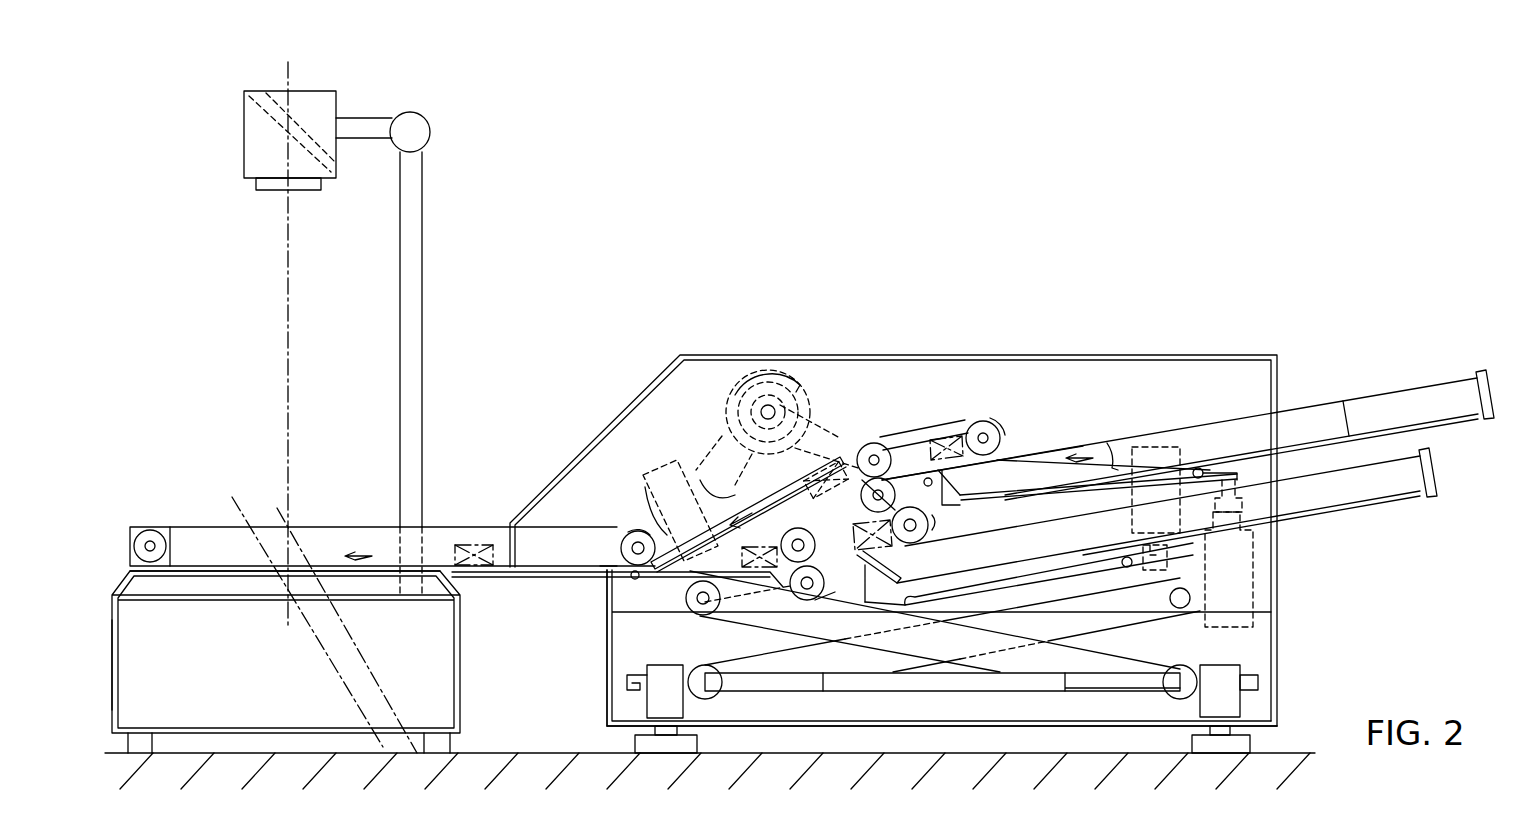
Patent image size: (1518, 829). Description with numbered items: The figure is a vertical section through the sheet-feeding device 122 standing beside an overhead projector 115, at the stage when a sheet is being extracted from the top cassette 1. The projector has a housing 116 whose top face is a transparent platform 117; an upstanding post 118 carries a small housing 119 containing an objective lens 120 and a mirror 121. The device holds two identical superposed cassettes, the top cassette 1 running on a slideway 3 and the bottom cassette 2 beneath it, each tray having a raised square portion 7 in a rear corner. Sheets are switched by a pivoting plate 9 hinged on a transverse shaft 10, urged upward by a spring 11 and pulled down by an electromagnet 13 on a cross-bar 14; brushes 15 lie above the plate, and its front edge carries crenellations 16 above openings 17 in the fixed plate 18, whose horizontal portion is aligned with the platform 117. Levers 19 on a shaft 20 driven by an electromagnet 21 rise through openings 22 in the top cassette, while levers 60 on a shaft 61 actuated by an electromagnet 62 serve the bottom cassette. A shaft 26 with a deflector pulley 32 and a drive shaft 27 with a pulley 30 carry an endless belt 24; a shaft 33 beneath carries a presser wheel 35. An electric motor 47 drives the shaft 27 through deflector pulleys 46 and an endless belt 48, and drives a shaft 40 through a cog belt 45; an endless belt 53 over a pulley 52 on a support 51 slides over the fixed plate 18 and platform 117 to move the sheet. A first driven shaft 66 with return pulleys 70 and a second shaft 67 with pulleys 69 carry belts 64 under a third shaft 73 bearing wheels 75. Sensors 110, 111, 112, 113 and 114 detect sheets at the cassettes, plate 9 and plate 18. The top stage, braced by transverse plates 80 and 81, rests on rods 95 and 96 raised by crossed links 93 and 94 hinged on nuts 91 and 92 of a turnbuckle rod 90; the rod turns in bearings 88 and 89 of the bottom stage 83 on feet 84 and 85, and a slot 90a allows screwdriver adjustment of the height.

The top cassette 1 is at (1410, 394).
The bottom cassette 2 is at (1380, 470).
The slideway 3 is at (948, 505).
The raised square portion 7 is at (865, 600).
The pivoting plate 9 is at (722, 505).
The transverse shaft 10 is at (882, 438).
The spring 11 is at (645, 574).
The electromagnet 13 is at (660, 462).
The cross-bar 14 is at (642, 490).
The brushes 15 is at (742, 488).
The crenellations 16 is at (630, 578).
The openings 17 is at (618, 560).
The fixed plate 18 is at (488, 578).
The levers 19 is at (1108, 446).
The transverse shaft 20 is at (1205, 468).
The electromagnet 21 is at (1237, 545).
The openings 22 is at (1057, 478).
The endless belt 24 is at (890, 433).
The transverse shaft 26 is at (990, 422).
The transverse shaft 27 is at (866, 444).
The deflector pulley 30 is at (858, 450).
The deflector pulley 32 is at (1003, 432).
The transverse shaft 33 is at (950, 482).
The presser wheel 35 is at (812, 545).
The shaft 40 is at (630, 532).
The cog belt 45 is at (700, 465).
The deflector pulleys 46 is at (748, 400).
The electric motor 47 is at (748, 378).
The endless belt 48 is at (820, 406).
The support 51 is at (133, 525).
The pulley 52 is at (160, 530).
The endless belt 53 is at (215, 526).
The levers 60 is at (1030, 560).
The transverse shaft 61 is at (1128, 570).
The electromagnet 62 is at (1160, 445).
The belts 64 is at (768, 497).
The first driven shaft 66 is at (930, 522).
The second transverse shaft 67 is at (735, 592).
The pulleys 69 is at (862, 568).
The return pulleys 70 is at (925, 535).
The third transverse shaft 73 is at (800, 600).
The wheels 75 is at (822, 600).
The transverse plate 80 is at (1277, 357).
The transverse plate 81 is at (607, 650).
The bottom stage 83 is at (1040, 728).
The foot 84 is at (665, 755).
The foot 85 is at (1255, 745).
The bearing 88 is at (680, 700).
The bearing 89 is at (1242, 670).
The turnbuckle rod 90 is at (920, 690).
The slot 90a is at (625, 684).
The moving nut 91 is at (722, 690).
The moving nut 92 is at (1165, 695).
The crossed link 93 is at (1040, 645).
The crossed link 94 is at (1120, 628).
The transverse rod 95 is at (1167, 555).
The transverse rod 96 is at (692, 608).
The first sensor 110 is at (945, 438).
The second sensor 111 is at (815, 476).
The third sensor 112 is at (470, 543).
The fourth sensor 113 is at (748, 570).
The fifth sensor 114 is at (888, 548).
The overhead projector 115 is at (104, 690).
The housing 116 is at (294, 724).
The transparent platform 117 is at (232, 575).
The upstanding post 118 is at (420, 236).
The small housing 119 is at (250, 158).
The objective lens 120 is at (272, 190).
The mirror 121 is at (333, 150).
The device 122 is at (1108, 340).